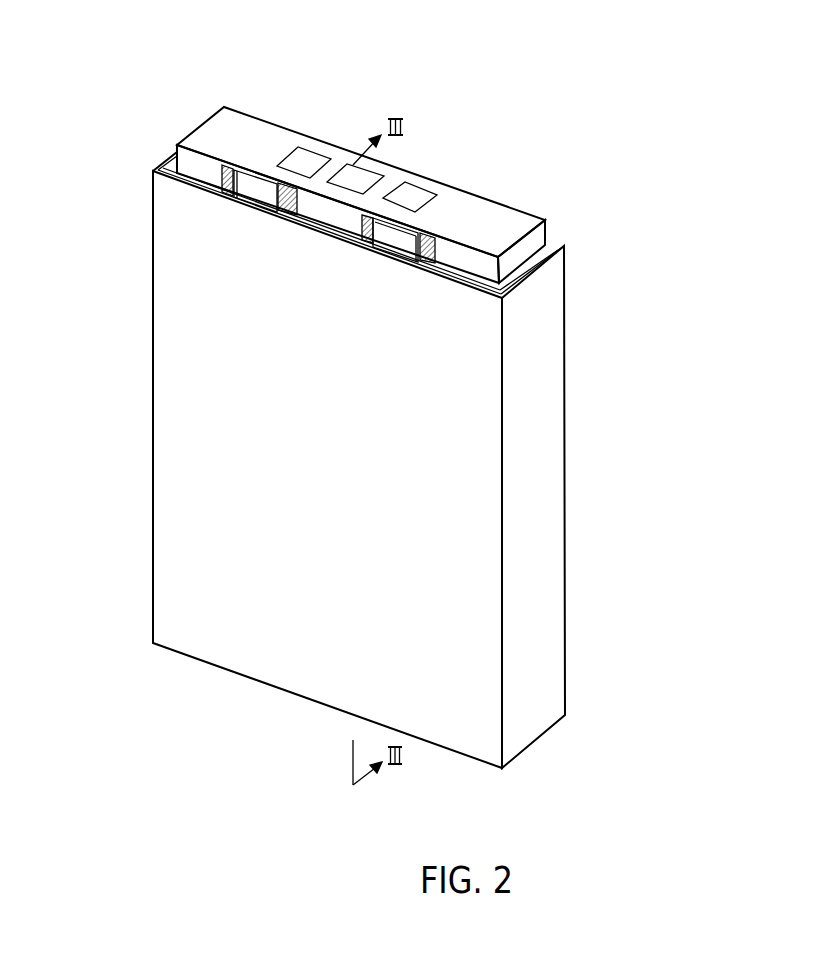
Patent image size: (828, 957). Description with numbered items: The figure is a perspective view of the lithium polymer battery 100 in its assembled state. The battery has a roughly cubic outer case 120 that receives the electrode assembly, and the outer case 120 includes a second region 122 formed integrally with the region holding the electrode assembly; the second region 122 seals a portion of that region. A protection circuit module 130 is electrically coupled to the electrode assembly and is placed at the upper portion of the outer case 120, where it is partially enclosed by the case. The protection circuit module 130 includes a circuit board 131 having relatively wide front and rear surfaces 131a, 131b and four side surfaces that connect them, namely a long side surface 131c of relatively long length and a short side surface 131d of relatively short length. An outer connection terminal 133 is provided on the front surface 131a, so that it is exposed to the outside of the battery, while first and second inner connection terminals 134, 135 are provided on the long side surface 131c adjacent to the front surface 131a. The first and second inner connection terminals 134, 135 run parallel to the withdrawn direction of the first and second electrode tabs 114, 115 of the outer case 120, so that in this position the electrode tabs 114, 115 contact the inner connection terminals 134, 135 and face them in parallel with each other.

The lithium polymer battery 100 is at (176, 30).
The outer case 120 is at (406, 460).
The second region 122 is at (284, 658).
The protection circuit module 130 is at (362, 198).
The circuit board 131 is at (362, 173).
The front surface 131a is at (237, 127).
The rear surface 131b is at (520, 262).
The long side surface 131c is at (190, 163).
The short side surface 131d is at (538, 242).
The outer connection terminal 133 is at (413, 192).
The first electrode tab 114 is at (390, 243).
The second electrode tab 115 is at (250, 198).
The first inner connection terminal 134 is at (423, 260).
The second inner connection terminal 135 is at (284, 208).